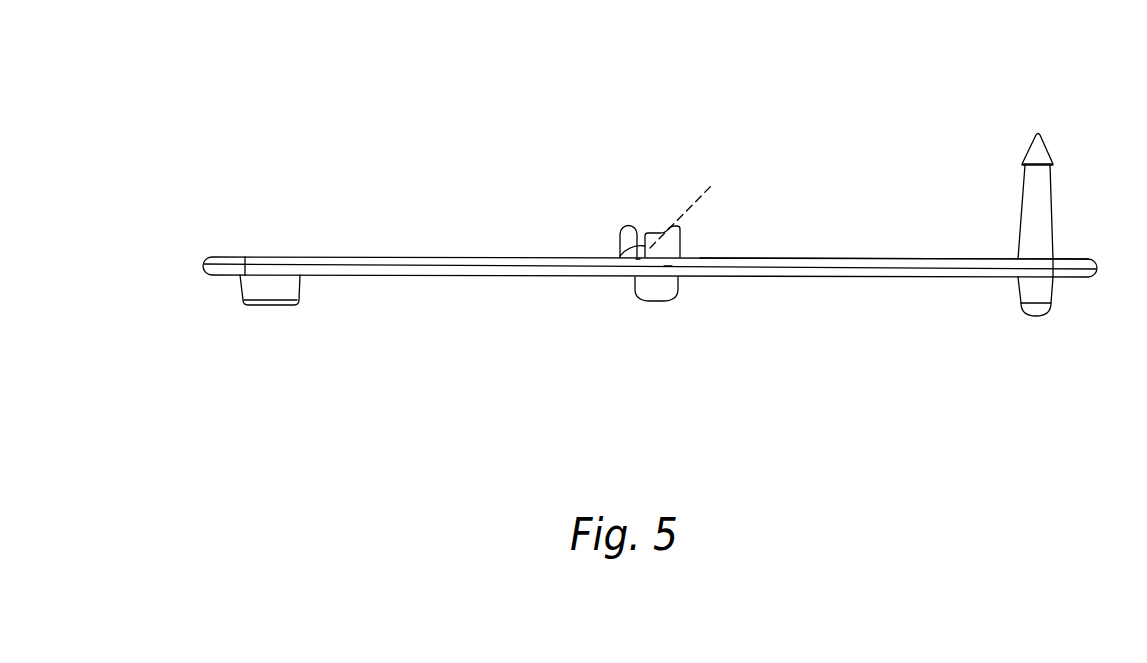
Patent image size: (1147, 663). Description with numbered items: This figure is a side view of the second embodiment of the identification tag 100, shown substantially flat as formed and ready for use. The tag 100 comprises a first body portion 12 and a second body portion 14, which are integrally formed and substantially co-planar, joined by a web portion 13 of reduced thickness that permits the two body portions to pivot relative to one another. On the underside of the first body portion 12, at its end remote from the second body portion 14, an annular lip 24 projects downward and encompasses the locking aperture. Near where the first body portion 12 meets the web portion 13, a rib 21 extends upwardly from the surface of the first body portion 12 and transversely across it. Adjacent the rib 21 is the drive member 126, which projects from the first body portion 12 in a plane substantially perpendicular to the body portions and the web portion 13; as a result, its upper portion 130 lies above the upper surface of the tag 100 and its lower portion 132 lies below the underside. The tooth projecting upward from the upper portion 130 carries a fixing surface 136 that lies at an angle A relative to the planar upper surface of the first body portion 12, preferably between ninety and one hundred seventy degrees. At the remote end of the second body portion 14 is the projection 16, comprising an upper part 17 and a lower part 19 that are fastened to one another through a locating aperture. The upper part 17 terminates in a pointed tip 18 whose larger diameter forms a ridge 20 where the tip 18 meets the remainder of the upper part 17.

The tag 100 is at (674, 210).
The first body portion 12 is at (650, 222).
The second body portion 14 is at (894, 218).
The annular lip 24 is at (277, 332).
The upper portion 130 is at (625, 201).
The rib 21 is at (591, 223).
The drive member 126 is at (716, 215).
The fixing surface 136 is at (683, 191).
The angle A is at (609, 293).
The web portion 13 is at (703, 303).
The lower portion 132 is at (654, 333).
The projection 16 is at (1045, 237).
The upper part 17 is at (1004, 205).
The pointed tip 18 is at (1071, 130).
The ridge 20 is at (999, 133).
The lower part 19 is at (1001, 327).